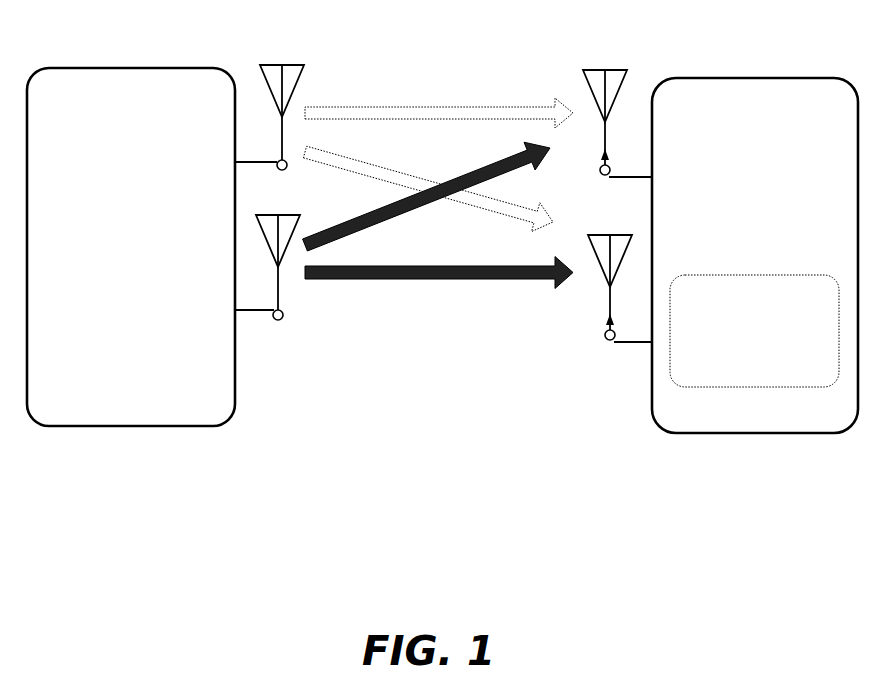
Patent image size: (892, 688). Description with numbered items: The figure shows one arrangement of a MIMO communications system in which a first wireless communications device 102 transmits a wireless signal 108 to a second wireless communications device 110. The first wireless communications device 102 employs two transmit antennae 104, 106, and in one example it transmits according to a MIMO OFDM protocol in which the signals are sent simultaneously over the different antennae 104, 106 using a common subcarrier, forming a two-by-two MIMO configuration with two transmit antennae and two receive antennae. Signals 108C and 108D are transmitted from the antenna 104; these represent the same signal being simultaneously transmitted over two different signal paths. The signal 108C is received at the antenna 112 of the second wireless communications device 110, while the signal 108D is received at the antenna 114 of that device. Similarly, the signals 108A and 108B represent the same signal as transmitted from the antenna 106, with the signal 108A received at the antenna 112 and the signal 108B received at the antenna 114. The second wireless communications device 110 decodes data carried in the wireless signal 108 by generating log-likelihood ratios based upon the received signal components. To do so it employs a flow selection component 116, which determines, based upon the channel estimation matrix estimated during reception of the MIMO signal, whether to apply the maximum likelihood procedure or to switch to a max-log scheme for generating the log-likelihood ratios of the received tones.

The first wireless communications device 102 is at (131, 247).
The antenna 104 is at (252, 310).
The antenna 106 is at (268, 66).
The wireless signal 108 is at (438, 296).
The signal 108A is at (410, 106).
The signal 108B is at (314, 152).
The signal 108C is at (323, 232).
The signal 108D is at (487, 280).
The second wireless communications device 110 is at (755, 255).
The antenna 112 is at (598, 68).
The antenna 114 is at (612, 348).
The flow selection component 116 is at (754, 331).